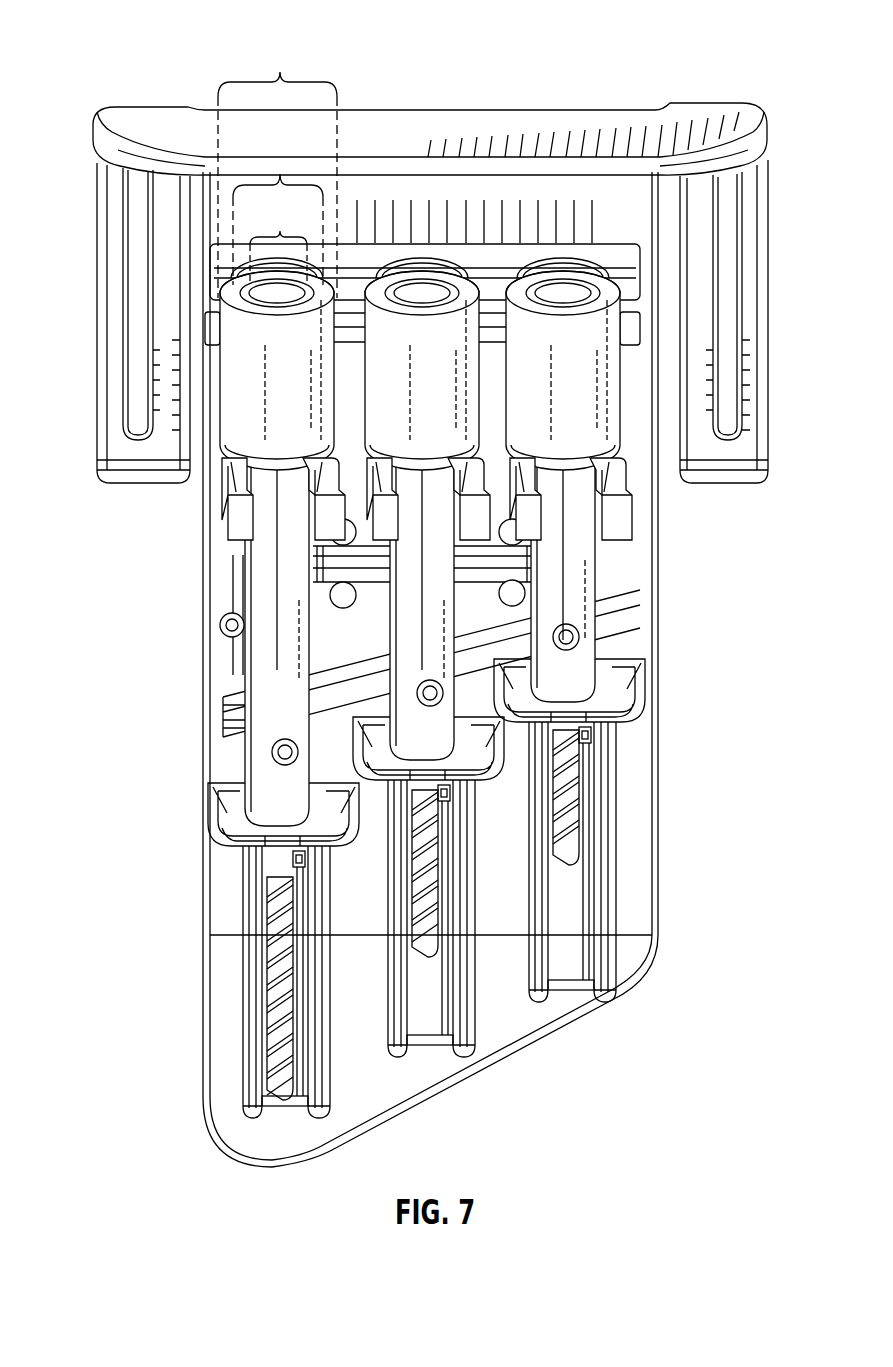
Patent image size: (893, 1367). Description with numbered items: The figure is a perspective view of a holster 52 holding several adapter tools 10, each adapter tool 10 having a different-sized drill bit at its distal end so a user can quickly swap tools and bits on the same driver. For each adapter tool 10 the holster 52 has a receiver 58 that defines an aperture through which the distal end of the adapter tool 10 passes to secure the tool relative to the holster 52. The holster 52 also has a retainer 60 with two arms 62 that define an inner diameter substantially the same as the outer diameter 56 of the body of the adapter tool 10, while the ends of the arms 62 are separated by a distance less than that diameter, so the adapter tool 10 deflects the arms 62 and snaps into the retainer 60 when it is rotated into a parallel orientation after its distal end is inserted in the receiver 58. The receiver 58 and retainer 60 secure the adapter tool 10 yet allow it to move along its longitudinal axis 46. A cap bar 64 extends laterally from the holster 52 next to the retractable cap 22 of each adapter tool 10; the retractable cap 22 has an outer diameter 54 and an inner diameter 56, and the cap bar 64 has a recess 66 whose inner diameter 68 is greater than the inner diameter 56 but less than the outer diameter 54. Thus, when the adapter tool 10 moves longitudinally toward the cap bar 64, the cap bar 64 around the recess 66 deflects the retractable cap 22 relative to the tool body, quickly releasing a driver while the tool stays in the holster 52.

The adapter tool 10 is at (260, 707).
The retractable cap 22 is at (210, 325).
The longitudinal axis 46 is at (262, 543).
The holster 52 is at (390, 126).
The outer diameter 54 is at (280, 72).
The inner diameter 56 is at (280, 231).
The receiver 58 is at (616, 690).
The retainer 60 is at (602, 483).
The arms 62 is at (538, 531).
The cap bar 64 is at (597, 252).
The recess 66 is at (311, 268).
The inner diameter 68 is at (280, 174).